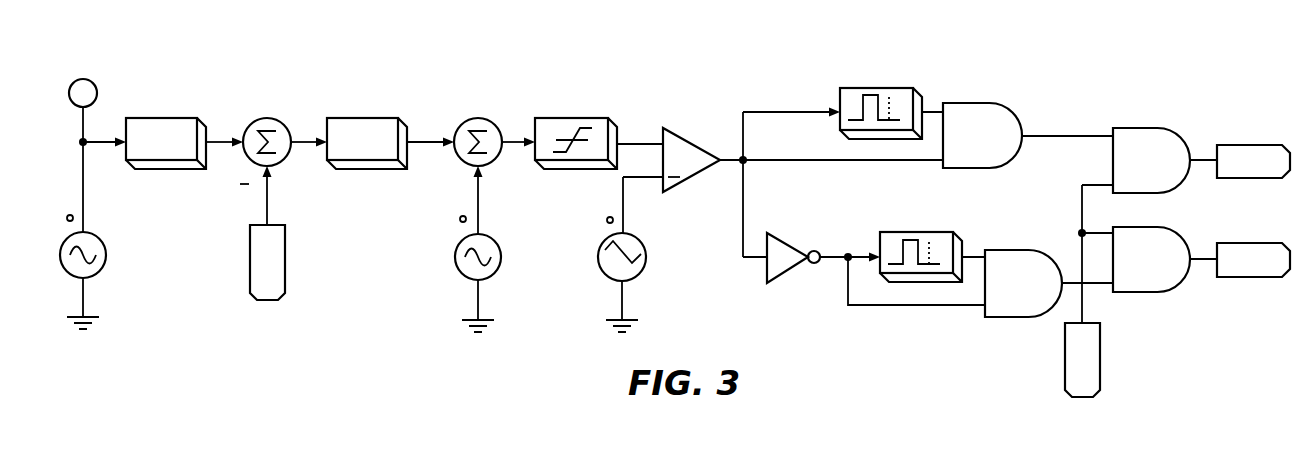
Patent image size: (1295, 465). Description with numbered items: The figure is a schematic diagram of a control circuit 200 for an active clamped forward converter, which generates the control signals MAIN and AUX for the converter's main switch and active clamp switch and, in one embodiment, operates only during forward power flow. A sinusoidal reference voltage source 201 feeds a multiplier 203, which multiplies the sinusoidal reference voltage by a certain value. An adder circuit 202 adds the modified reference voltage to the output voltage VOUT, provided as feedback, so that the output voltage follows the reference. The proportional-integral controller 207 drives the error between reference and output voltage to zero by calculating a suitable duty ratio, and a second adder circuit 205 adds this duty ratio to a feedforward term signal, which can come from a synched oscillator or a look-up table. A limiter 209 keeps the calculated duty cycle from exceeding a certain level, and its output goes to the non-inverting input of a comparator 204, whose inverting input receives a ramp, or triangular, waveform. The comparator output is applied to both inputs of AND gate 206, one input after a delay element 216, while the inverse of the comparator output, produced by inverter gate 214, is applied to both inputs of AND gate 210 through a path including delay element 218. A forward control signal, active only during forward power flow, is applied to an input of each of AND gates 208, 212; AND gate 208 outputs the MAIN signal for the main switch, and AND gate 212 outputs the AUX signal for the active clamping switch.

The control circuit 200 is at (1200, 66).
The sinusoidal reference voltage source 201 is at (88, 230).
The adder circuit 202 is at (262, 118).
The multiplier 203 is at (157, 118).
The comparator 204 is at (668, 125).
The adder circuit 205 is at (474, 118).
The AND gate 206 is at (962, 103).
The proportional-integral (PI) controller 207 is at (353, 118).
The AND gate 208 is at (1122, 128).
The limiter 209 is at (550, 118).
The AND gate 210 is at (1000, 250).
The AND gate 212 is at (1168, 227).
The inverter gate 214 is at (770, 231).
The delay element 216 is at (903, 88).
The delay element 218 is at (937, 232).